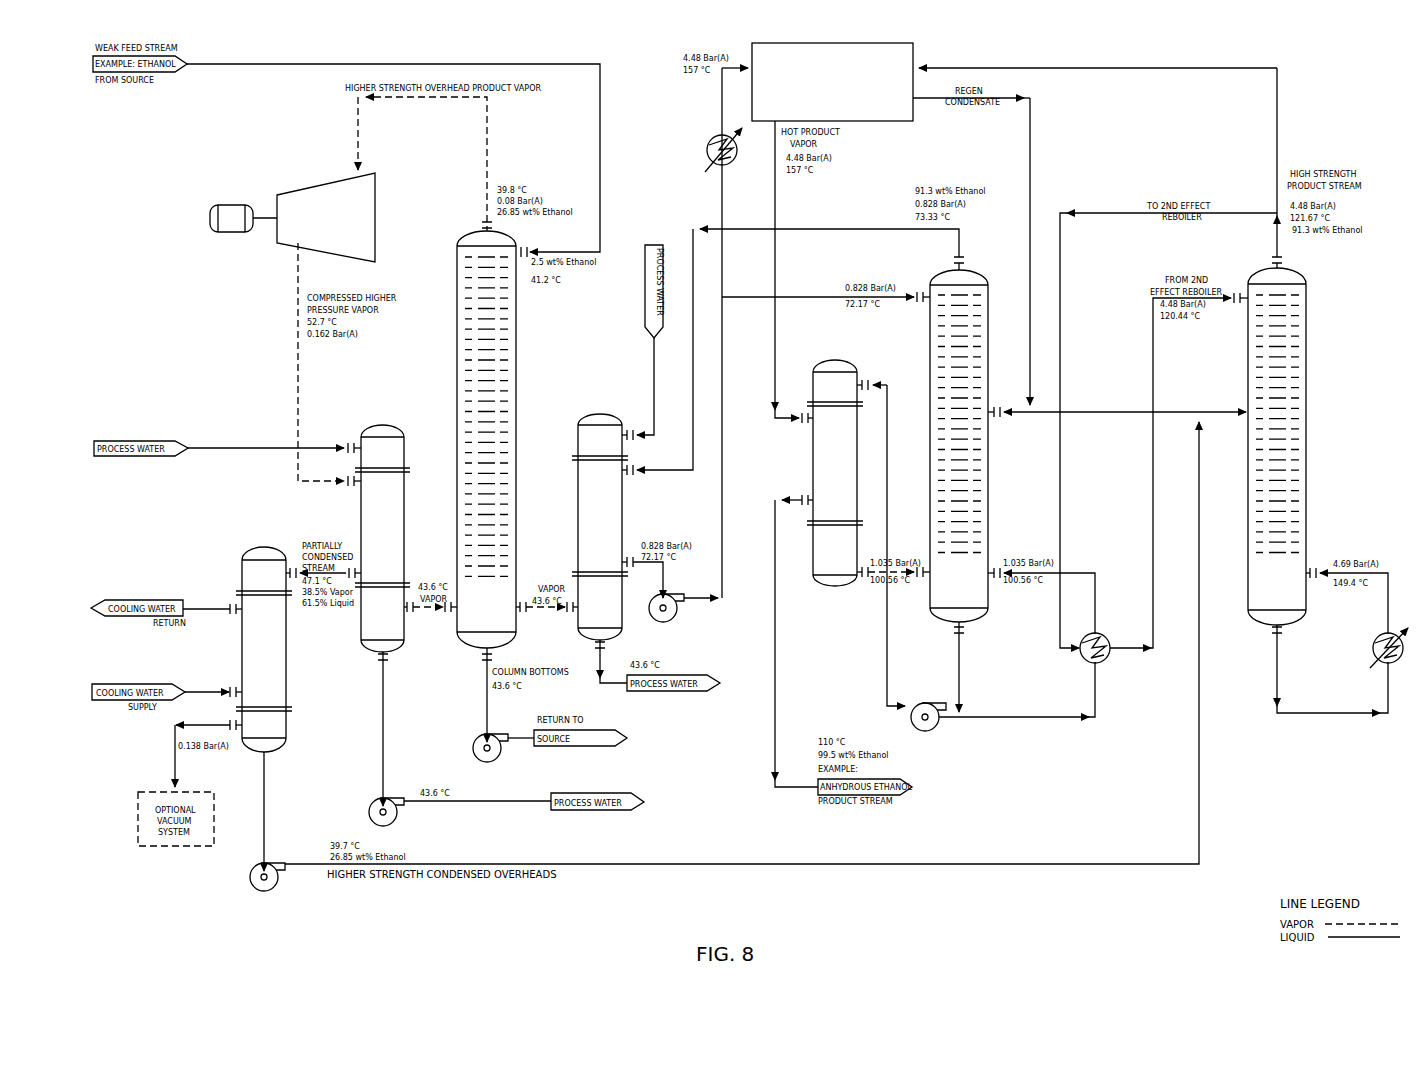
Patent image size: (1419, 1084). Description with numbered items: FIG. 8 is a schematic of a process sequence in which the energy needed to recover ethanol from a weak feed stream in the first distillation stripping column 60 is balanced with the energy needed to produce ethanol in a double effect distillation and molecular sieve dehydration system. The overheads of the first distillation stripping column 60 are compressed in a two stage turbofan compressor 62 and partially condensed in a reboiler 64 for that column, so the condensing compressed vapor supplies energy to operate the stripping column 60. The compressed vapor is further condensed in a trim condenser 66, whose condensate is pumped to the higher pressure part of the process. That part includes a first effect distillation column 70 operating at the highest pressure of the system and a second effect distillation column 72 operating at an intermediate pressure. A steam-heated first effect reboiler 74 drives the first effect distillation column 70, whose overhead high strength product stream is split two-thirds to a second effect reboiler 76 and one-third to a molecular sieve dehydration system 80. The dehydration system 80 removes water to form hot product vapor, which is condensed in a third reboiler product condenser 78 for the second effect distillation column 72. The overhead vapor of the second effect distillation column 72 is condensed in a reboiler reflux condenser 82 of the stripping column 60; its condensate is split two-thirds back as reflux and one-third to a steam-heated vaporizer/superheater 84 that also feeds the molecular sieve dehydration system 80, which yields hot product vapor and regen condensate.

The first distillation stripping column 60 is at (520, 446).
The two stage turbofan compressor 62 is at (328, 180).
The reboiler 64 is at (405, 527).
The trim condenser 66 is at (288, 651).
The first effect distillation column 70 is at (1312, 412).
The second effect distillation column 72 is at (990, 492).
The first effect reboiler 74 is at (1378, 638).
The second effect reboiler 76 is at (1106, 641).
The reboiler product condenser 78 is at (812, 462).
The molecular sieve dehydration system 80 is at (833, 121).
The reboiler reflux condenser 82 is at (623, 516).
The vaporizer/superheater 84 is at (710, 140).